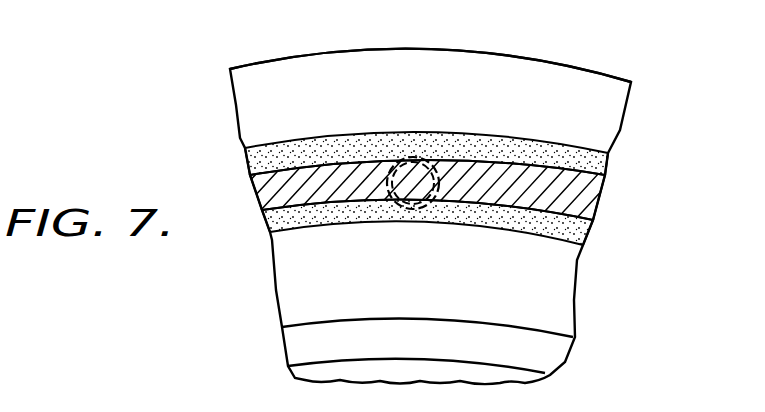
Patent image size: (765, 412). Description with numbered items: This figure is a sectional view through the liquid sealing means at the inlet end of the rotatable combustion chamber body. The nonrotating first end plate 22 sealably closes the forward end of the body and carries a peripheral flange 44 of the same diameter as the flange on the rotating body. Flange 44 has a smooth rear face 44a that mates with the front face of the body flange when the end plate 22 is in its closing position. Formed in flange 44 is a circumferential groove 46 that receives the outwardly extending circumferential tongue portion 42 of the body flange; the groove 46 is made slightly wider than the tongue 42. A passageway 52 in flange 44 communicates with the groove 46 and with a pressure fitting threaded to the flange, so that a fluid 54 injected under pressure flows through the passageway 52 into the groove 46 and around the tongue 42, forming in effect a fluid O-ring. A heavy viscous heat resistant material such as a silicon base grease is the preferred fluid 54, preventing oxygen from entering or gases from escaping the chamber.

The first end plate 22 is at (555, 362).
The circumferential tongue portion 42 is at (473, 173).
The peripheral flange 44 is at (577, 68).
The smooth rear face 44a is at (258, 72).
The circumferential groove 46 is at (557, 150).
The passageway 52 is at (392, 205).
The fluid 54 is at (593, 175).